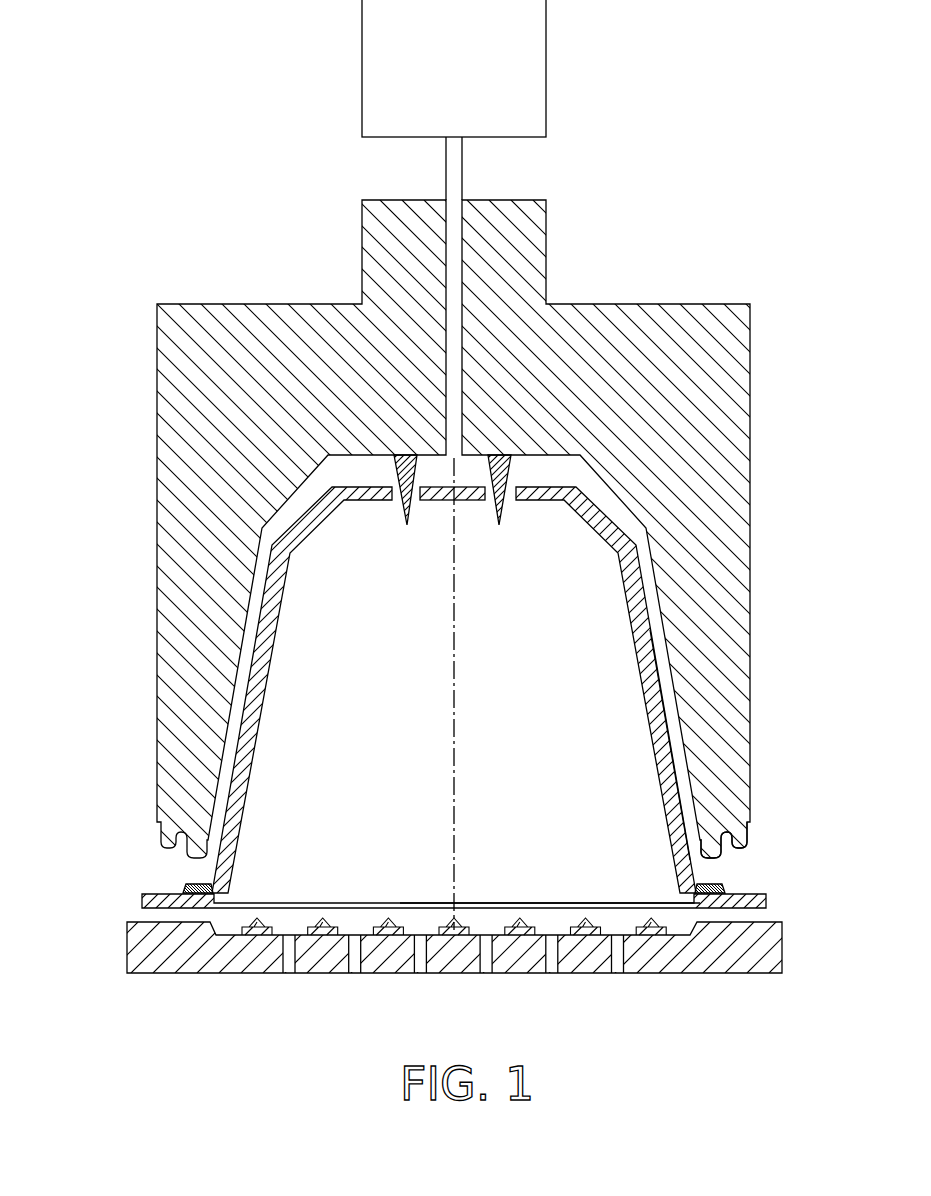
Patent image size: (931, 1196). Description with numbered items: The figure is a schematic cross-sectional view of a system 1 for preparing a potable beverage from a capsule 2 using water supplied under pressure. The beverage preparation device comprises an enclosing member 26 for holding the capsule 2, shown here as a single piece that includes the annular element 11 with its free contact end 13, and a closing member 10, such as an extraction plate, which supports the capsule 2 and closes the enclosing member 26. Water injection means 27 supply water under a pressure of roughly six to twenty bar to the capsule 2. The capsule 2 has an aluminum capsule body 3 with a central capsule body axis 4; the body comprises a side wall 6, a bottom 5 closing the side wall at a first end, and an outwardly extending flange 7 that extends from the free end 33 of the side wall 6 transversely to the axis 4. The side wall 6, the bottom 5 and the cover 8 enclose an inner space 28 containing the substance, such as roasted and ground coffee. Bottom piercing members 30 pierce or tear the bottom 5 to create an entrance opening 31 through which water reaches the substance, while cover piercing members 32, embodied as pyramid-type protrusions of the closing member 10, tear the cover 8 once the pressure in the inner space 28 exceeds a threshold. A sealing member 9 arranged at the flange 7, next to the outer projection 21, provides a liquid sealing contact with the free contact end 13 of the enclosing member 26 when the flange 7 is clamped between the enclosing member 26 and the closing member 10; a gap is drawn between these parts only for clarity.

The system 1 is at (786, 421).
The capsule 2 is at (636, 598).
The aluminum capsule body 3 is at (666, 778).
The central capsule body axis 4 is at (450, 713).
The bottom 5 is at (558, 501).
The side wall 6 is at (671, 820).
The outwardly extending flange 7 is at (767, 903).
The cover 8 is at (551, 903).
The sealing member 9 is at (214, 888).
The closing member 10 is at (712, 974).
The annular element 11 is at (752, 690).
The free contact end 13 is at (745, 842).
The outer projection 21 is at (183, 887).
The enclosing member 26 is at (103, 360).
The water injection means 27 is at (468, 55).
The inner space 28 is at (552, 783).
The bottom piercing members 30 is at (505, 466).
The entrance opening 31 is at (511, 515).
The cover piercing members 32 is at (388, 920).
The free end 33 is at (705, 882).